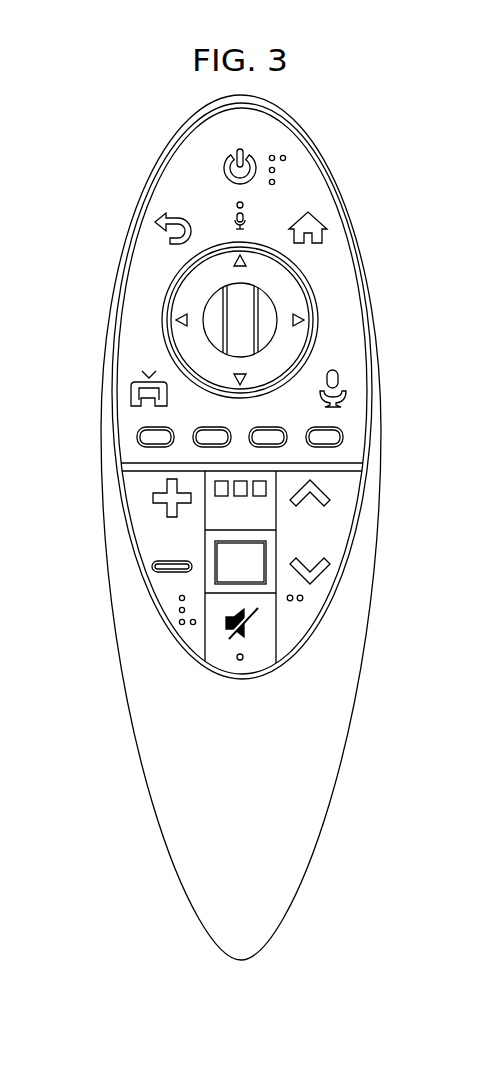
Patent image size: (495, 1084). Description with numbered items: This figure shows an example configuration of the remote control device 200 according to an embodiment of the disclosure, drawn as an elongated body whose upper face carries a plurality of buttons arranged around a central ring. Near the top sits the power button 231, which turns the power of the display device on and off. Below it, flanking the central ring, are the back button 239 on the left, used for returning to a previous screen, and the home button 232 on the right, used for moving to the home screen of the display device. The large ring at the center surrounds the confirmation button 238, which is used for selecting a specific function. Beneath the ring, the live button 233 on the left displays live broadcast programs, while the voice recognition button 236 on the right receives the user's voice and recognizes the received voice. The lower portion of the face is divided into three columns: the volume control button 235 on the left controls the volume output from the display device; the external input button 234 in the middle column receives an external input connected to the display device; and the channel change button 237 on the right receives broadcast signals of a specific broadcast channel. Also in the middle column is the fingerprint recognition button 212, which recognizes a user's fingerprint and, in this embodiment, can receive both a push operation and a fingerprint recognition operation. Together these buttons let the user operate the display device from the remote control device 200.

The remote control device 200 is at (59, 128).
The power button 231 is at (255, 152).
The home button 232 is at (318, 218).
The back button 239 is at (153, 232).
The confirmation button 238 is at (210, 302).
The live button 233 is at (130, 397).
The voice recognition button 236 is at (343, 385).
The volume control button 235 is at (130, 544).
The external input button 234 is at (247, 475).
The channel change button 237 is at (338, 523).
The fingerprint recognition button 212 is at (253, 585).